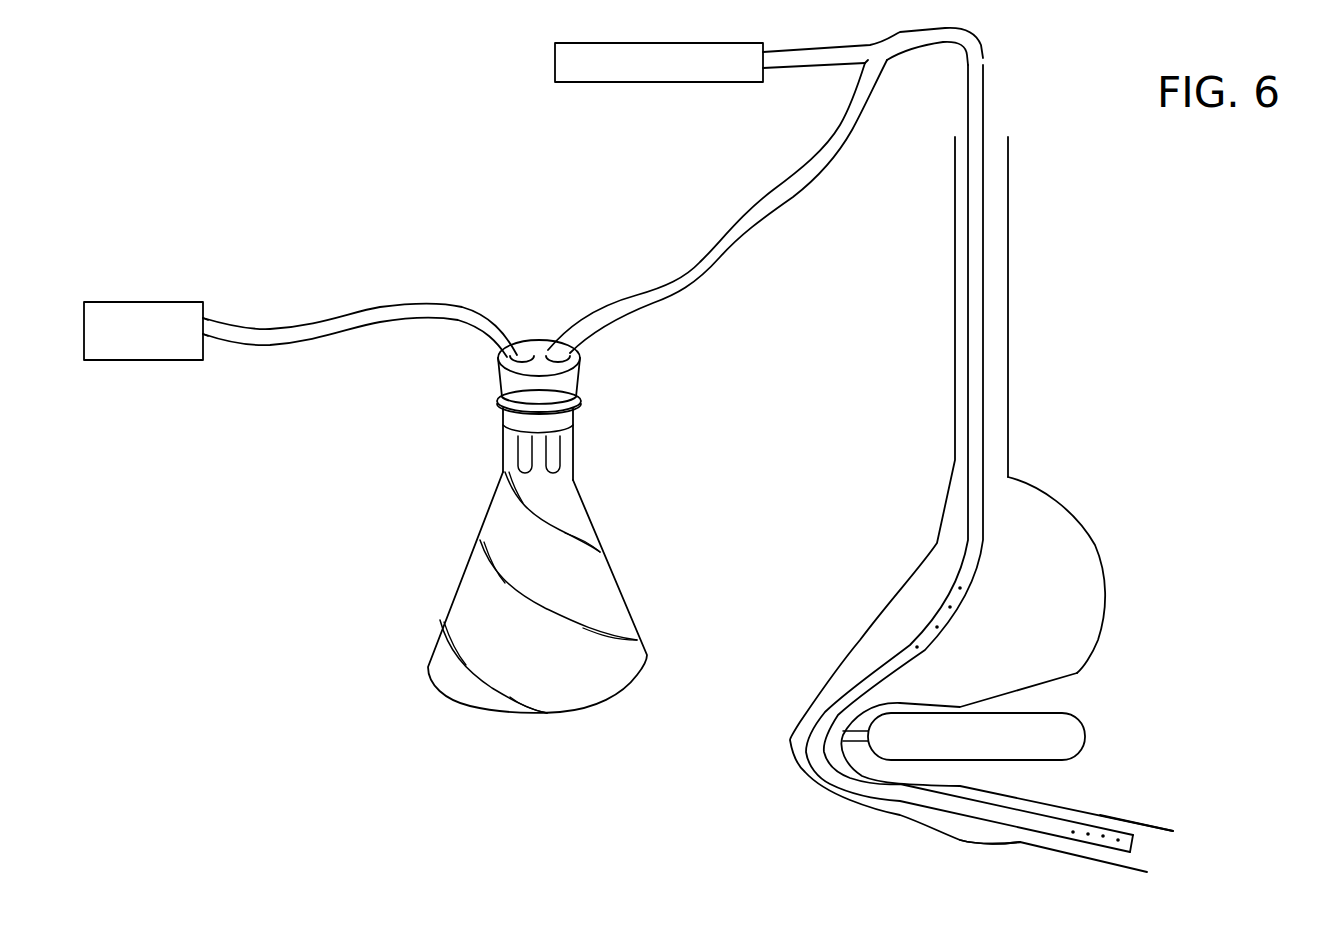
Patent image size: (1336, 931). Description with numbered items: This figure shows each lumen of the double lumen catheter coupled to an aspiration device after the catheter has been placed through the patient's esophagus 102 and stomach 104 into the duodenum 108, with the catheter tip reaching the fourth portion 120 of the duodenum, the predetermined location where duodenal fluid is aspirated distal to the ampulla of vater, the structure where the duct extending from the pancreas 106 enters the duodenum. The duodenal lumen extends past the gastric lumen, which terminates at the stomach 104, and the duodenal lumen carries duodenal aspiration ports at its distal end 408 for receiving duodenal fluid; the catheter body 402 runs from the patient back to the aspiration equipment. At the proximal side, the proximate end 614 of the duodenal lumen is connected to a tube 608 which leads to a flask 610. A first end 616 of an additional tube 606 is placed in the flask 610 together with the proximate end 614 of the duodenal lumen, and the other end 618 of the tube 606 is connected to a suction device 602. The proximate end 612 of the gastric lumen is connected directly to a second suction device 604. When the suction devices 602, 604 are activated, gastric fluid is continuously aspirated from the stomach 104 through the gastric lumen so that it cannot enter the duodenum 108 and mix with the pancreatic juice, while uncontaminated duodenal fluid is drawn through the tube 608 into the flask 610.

The esophagus 102 is at (1010, 253).
The stomach 104 is at (1102, 613).
The pancreas 106 is at (1087, 737).
The duodenum 108 is at (1103, 810).
The fourth portion 120 is at (1020, 861).
The inner suction tube 402 is at (997, 137).
The distal end 408 is at (1085, 834).
The suction device 602 is at (157, 302).
The second suction device 604 is at (658, 82).
The additional tube 606 is at (350, 312).
The tube 608 is at (724, 252).
The flask 610 is at (640, 655).
The proximate end of the gastric lumen 612 is at (813, 77).
The proximate end of the duodenal lumen 614 is at (858, 134).
The first end 616 is at (510, 314).
The other end 618 is at (220, 314).